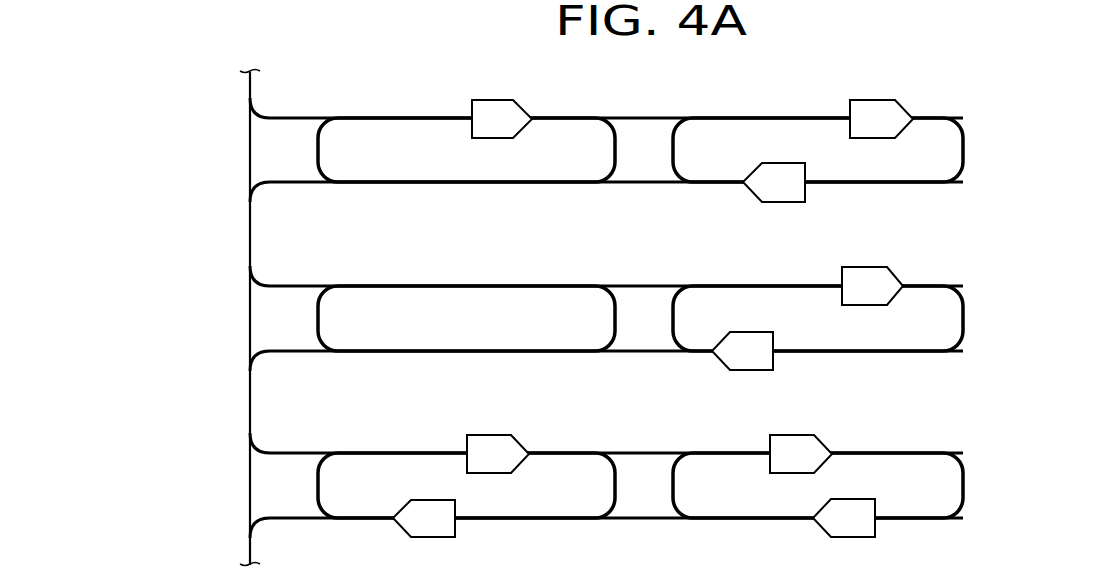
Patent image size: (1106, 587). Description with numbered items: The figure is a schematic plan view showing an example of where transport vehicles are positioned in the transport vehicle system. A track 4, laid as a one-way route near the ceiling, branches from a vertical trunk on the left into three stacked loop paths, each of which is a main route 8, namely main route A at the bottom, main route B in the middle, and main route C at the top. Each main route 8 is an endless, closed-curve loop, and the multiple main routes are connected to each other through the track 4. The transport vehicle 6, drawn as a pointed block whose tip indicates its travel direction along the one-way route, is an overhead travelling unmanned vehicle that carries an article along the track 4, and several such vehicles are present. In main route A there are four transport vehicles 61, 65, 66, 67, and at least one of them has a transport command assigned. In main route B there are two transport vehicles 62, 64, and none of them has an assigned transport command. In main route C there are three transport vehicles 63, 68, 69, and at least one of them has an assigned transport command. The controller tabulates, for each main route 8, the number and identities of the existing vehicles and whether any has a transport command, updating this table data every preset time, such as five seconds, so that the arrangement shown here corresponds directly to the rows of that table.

The track 4 is at (247, 145).
The transport vehicle 6 is at (668, 299).
The main route 8 is at (665, 320).
The transport vehicle 61 is at (457, 528).
The transport vehicle 62 is at (774, 364).
The transport vehicle 63 is at (871, 99).
The transport vehicle 64 is at (840, 272).
The transport vehicle 65 is at (877, 528).
The transport vehicle 66 is at (769, 442).
The transport vehicle 67 is at (466, 442).
The transport vehicle 68 is at (806, 197).
The transport vehicle 69 is at (490, 99).
The main route A is at (968, 502).
The main route B is at (968, 335).
The main route C is at (968, 166).